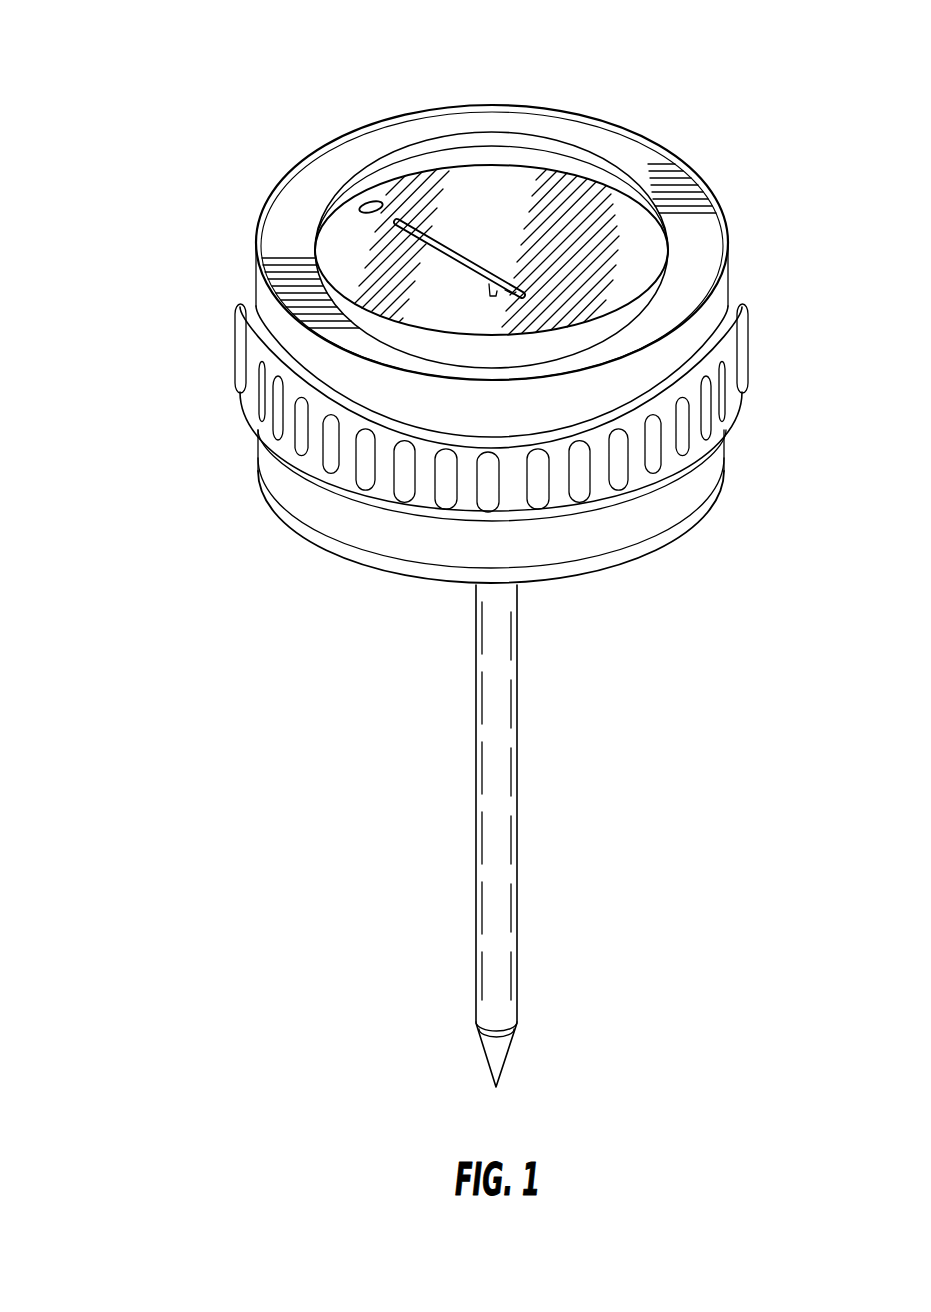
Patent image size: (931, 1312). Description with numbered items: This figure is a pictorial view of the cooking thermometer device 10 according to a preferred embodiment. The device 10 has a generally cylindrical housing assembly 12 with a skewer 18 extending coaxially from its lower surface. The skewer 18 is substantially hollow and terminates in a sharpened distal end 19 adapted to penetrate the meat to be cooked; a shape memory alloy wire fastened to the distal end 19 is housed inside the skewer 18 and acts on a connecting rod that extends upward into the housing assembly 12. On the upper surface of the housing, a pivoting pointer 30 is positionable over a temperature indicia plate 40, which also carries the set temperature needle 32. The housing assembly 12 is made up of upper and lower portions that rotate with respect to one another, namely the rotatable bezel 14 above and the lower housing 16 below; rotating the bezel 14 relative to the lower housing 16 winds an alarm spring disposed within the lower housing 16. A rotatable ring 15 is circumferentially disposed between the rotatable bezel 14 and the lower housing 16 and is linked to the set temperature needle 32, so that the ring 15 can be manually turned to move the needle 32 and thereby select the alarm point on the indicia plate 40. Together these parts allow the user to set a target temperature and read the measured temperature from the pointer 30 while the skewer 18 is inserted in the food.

The cooking thermometer device 10 is at (290, 819).
The housing assembly 12 is at (215, 566).
The rotatable bezel 14 is at (586, 124).
The rotatable ring 15 is at (747, 328).
The lower housing 16 is at (690, 522).
The skewer 18 is at (520, 778).
The sharpened distal end 19 is at (508, 1050).
The pivoting pointer 30 is at (444, 238).
The set temperature needle 32 is at (369, 199).
The temperature indicia plate 40 is at (342, 257).